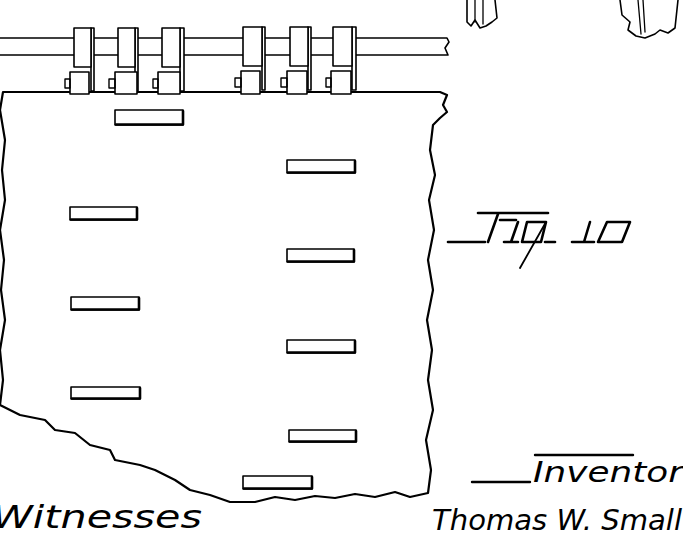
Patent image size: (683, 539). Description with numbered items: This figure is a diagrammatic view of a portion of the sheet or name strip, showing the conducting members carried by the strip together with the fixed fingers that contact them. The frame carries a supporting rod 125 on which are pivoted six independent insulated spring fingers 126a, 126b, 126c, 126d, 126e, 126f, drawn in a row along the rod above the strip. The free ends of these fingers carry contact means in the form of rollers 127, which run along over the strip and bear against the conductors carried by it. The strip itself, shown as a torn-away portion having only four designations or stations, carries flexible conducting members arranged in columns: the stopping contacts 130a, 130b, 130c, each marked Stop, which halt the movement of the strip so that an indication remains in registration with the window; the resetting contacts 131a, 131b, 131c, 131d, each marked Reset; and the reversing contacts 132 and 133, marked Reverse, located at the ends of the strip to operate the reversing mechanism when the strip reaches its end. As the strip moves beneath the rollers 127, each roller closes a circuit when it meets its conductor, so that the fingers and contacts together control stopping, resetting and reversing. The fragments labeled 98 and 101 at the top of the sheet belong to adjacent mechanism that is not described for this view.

The supporting rod 125 is at (25, 50).
The spring finger 126a is at (83, 36).
The spring finger 126b is at (128, 36).
The spring finger 126c is at (172, 36).
The spring finger 126d is at (255, 34).
The spring finger 126e is at (300, 34).
The spring finger 126f is at (347, 34).
The rollers 127 is at (160, 93).
The stopping contact 130a is at (103, 210).
The stopping contact 130b is at (110, 301).
The stopping contact 130c is at (110, 390).
The resetting contact 131a is at (327, 164).
The resetting contact 131b is at (322, 253).
The resetting contact 131c is at (325, 343).
The resetting contact 131d is at (325, 433).
The reversing contact 132 is at (167, 115).
The reversing contact 133 is at (281, 480).
The fragment of adjacent mechanism 98 is at (470, 8).
The fragment of adjacent mechanism 101 is at (628, 19).